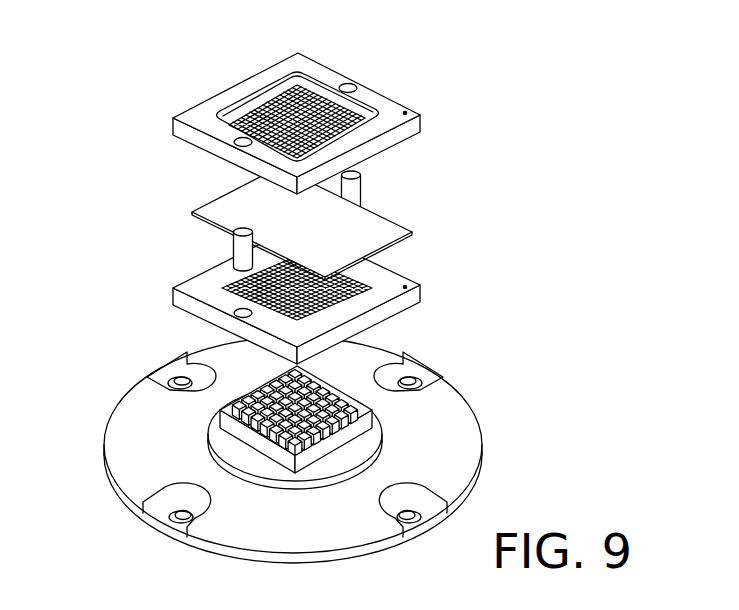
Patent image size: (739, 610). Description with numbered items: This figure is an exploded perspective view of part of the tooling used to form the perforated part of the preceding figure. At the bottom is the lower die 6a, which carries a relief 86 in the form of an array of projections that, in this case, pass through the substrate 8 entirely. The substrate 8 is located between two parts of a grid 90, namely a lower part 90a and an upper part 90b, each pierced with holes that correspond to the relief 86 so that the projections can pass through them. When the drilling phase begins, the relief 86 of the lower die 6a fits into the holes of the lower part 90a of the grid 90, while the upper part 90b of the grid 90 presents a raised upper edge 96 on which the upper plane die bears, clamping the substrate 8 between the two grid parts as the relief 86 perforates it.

The lower die 6a is at (132, 430).
The substrate 8 is at (210, 208).
The relief 86 is at (378, 408).
The grid 90 is at (359, 193).
The lower part of the grid 90a is at (393, 282).
The upper part of the grid 90b is at (354, 108).
The raised upper edge 96 is at (247, 85).